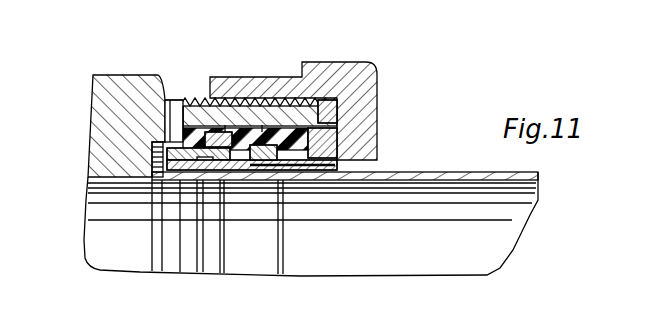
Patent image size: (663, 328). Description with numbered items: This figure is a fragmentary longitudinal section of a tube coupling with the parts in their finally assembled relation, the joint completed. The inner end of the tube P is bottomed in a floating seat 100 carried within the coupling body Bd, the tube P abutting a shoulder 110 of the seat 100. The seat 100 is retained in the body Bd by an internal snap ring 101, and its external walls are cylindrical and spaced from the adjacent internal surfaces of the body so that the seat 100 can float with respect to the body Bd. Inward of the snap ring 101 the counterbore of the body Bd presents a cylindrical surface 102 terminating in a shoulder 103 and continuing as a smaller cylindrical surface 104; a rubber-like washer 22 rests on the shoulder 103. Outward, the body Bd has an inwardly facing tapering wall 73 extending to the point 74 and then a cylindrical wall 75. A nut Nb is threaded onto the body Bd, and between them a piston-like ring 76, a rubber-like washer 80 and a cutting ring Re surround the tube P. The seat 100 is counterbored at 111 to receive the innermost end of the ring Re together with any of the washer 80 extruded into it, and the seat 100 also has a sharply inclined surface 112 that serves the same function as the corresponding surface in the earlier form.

The tube P is at (512, 219).
The coupling body Bd is at (107, 102).
The nut Nb is at (360, 80).
The cutting ring Re is at (320, 178).
The rubber-like washer 22 is at (198, 110).
The inwardly facing tapering wall 73 is at (278, 136).
The point 74 is at (327, 103).
The cylindrical wall 75 is at (312, 130).
The piston-like ring 76 is at (338, 130).
The rubber-like washer 80 is at (250, 174).
The floating seat 100 is at (170, 174).
The internal snap ring 101 is at (262, 132).
The cylindrical surface 102 is at (228, 128).
The shoulder 103 is at (183, 104).
The smaller cylindrical surface 104 is at (167, 100).
The shoulder 110 is at (187, 180).
The counterbore 111 is at (203, 170).
The sharply inclined surface 112 is at (240, 120).